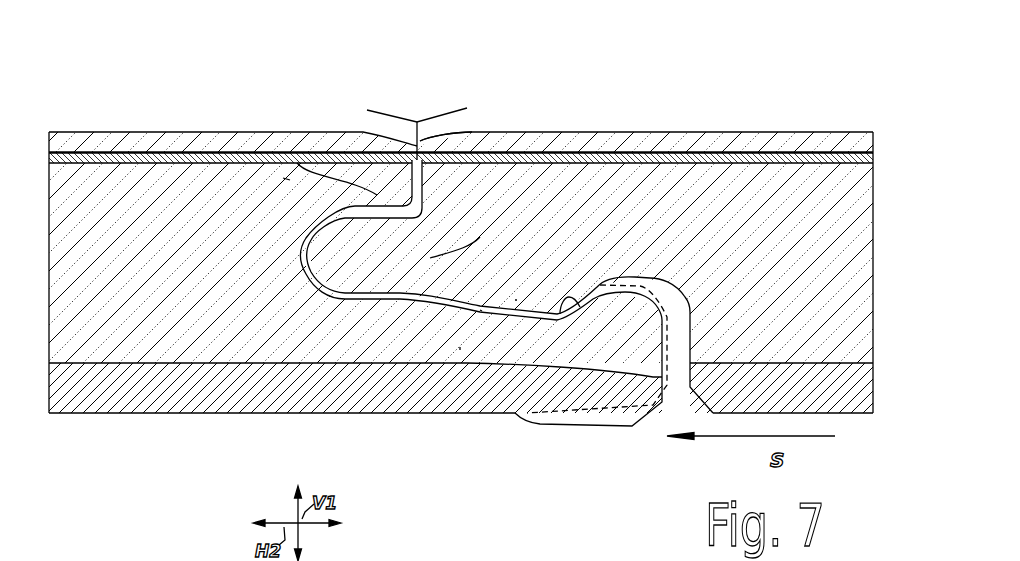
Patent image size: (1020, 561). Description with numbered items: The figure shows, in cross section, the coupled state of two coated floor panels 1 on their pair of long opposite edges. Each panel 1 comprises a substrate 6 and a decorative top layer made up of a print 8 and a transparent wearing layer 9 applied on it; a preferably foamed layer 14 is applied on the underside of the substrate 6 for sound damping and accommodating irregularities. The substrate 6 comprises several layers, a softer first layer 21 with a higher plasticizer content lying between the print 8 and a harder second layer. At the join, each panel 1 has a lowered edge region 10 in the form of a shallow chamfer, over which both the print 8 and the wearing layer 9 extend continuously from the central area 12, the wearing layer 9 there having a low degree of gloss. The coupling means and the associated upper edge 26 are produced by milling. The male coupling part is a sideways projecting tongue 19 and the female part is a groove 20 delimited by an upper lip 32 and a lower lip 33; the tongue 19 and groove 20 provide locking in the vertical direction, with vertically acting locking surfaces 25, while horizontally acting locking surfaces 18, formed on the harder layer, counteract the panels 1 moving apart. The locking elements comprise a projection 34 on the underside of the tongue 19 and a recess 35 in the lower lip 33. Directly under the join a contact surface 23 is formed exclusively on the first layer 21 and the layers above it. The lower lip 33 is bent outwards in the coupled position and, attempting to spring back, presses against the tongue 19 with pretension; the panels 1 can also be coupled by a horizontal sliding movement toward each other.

The coated panel 1 is at (220, 125).
The substrate 6 is at (147, 342).
The print 8 is at (298, 158).
The transparent wearing layer 9 is at (572, 140).
The lowered edge region 10 is at (397, 113).
The central area 12 is at (765, 132).
The foamed layer 14 is at (280, 407).
The horizontally acting locking surfaces 18 is at (560, 313).
The tongue 19 is at (480, 237).
The groove 20 is at (357, 297).
The first layer 21 is at (77, 158).
The contact surface 23 is at (415, 146).
The vertically acting locking surfaces 25 is at (283, 178).
The upper edge 26 is at (472, 132).
The upper lip 32 is at (297, 163).
The lower lip 33 is at (460, 347).
The projection 34 is at (515, 300).
The recess 35 is at (480, 310).